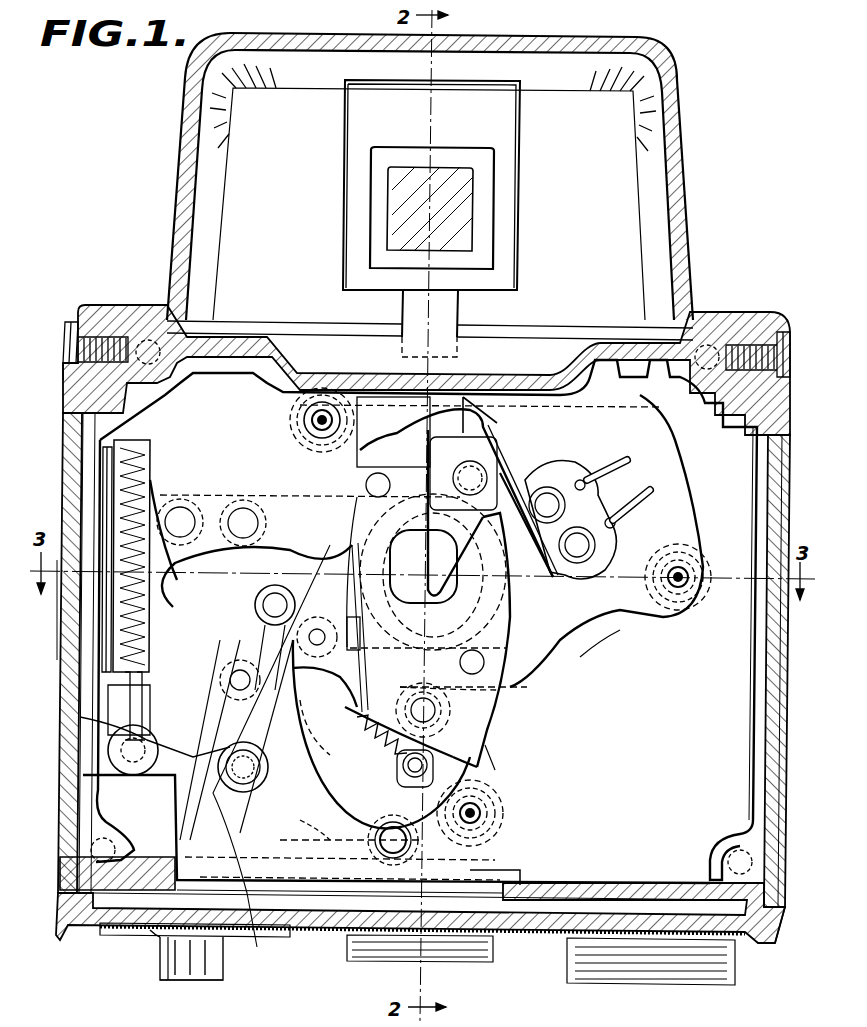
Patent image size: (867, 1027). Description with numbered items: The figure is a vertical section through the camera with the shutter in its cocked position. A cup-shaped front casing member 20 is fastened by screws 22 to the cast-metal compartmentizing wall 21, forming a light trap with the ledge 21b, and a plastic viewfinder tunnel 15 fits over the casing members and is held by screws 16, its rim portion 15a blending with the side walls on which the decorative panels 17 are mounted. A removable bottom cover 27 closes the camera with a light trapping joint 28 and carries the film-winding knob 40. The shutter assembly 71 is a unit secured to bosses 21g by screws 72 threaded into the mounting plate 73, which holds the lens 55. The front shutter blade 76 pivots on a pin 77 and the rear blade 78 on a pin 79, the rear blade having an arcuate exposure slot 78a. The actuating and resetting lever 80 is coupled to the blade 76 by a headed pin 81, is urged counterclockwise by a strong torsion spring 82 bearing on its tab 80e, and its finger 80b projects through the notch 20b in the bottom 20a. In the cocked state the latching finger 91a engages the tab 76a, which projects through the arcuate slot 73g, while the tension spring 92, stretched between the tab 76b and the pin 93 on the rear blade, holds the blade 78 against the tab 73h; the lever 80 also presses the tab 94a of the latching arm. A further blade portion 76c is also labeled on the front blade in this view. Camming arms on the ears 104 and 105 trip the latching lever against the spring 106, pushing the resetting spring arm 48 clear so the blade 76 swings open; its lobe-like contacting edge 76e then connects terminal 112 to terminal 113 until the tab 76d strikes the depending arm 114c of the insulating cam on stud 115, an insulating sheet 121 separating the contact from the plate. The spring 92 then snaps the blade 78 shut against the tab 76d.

The viewfinder tunnel 15 is at (185, 140).
The rim portion 15a is at (63, 378).
The screws 16 is at (72, 325).
The decorative panels 17 is at (60, 600).
The front casing member 20 is at (60, 800).
The bottom 20a is at (575, 893).
The notch 20b is at (497, 867).
The compartmentizing wall 21 is at (420, 621).
The ledge 21b is at (751, 688).
The bosses 21g is at (348, 395).
The screws 22 is at (146, 340).
The bottom cover 27 is at (765, 943).
The light trapping joint 28 is at (781, 912).
The film-winding knob 40 is at (212, 978).
The resetting spring arm 48 is at (320, 890).
The lens 55 is at (390, 543).
The shutter assembly 71 is at (580, 657).
The screws 72 is at (322, 410).
The mounting plate 73 is at (590, 610).
The arcuate slot 73g is at (212, 510).
The tab 73h is at (320, 836).
The front shutter blade 76 is at (490, 720).
The tab 76a is at (360, 600).
The tab 76b is at (318, 745).
The lever pin 76c is at (368, 482).
The tab 76d is at (487, 763).
The lobe-like contacting edge 76e is at (510, 607).
The pin 77 is at (215, 657).
The rear shutter blade 78 is at (487, 748).
The arcuate exposure slot 78a is at (497, 690).
The pin 79 is at (238, 778).
The actuating and resetting lever 80 is at (252, 935).
The finger 80b is at (163, 940).
The tab 80e is at (235, 660).
The headed pin 81 is at (290, 555).
The torsion spring 82 is at (160, 748).
The latching finger 91a is at (283, 545).
The tension spring 92 is at (380, 782).
The pin 93 is at (415, 778).
The tab 94a is at (345, 663).
The ear 104 is at (103, 455).
The ear 105 is at (130, 720).
The spring 106 is at (114, 520).
The terminal 112 is at (550, 492).
The terminal 113 is at (590, 552).
The depending arm 114c is at (440, 500).
The stud 115 is at (474, 475).
The insulating sheet 121 is at (463, 400).